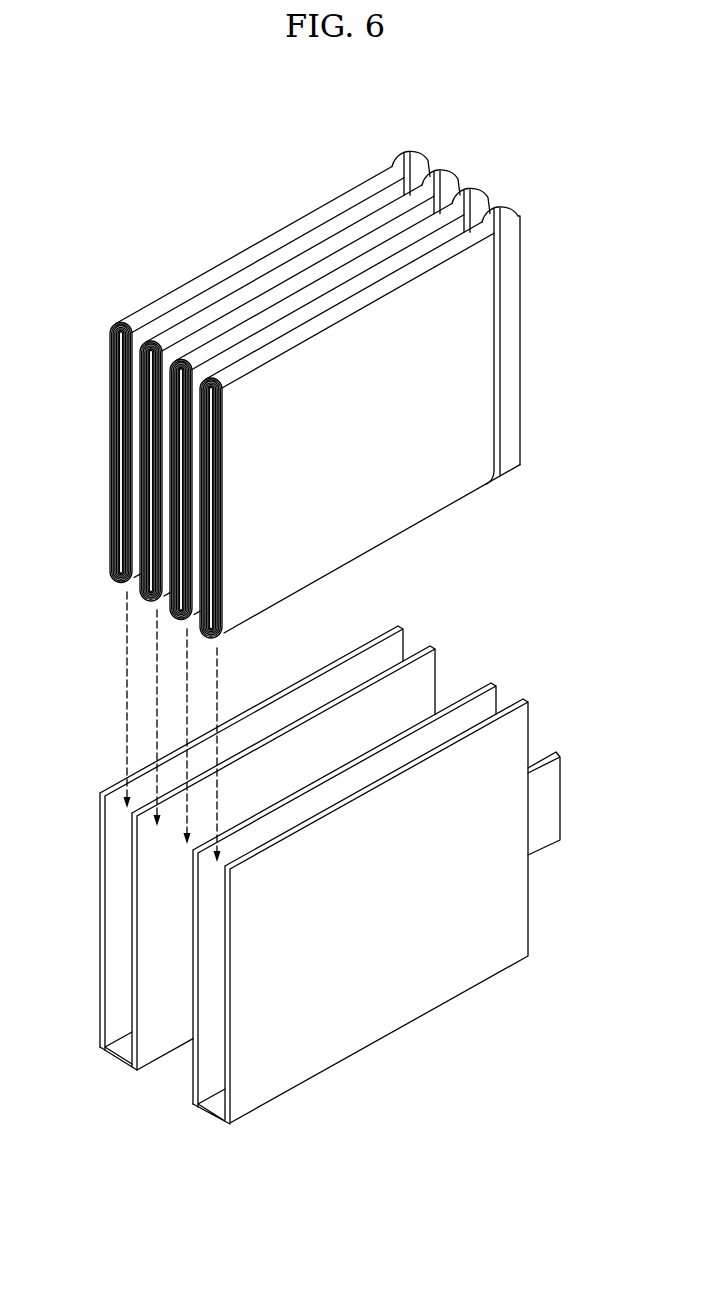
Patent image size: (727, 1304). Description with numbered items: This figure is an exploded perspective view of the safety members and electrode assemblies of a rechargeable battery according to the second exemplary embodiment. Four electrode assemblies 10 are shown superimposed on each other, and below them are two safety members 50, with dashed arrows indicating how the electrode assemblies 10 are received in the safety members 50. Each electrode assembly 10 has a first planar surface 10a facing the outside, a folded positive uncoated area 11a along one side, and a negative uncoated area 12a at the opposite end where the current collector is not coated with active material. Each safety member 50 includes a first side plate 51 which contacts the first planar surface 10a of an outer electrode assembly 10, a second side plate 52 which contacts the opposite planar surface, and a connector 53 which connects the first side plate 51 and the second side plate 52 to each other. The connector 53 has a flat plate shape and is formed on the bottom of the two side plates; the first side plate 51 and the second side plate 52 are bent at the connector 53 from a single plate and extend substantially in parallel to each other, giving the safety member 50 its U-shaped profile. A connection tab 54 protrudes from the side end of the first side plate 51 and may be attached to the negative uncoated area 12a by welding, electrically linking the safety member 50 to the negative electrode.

The electrode assembly 10 is at (247, 244).
The first planar surface 10a is at (432, 495).
The positive uncoated area 11a is at (124, 321).
The negative uncoated area 12a is at (410, 161).
The safety member 50 is at (106, 1062).
The first side plate 51 is at (427, 990).
The second side plate 52 is at (207, 1066).
The connector 53 is at (214, 1101).
The connection tab 54 is at (547, 802).